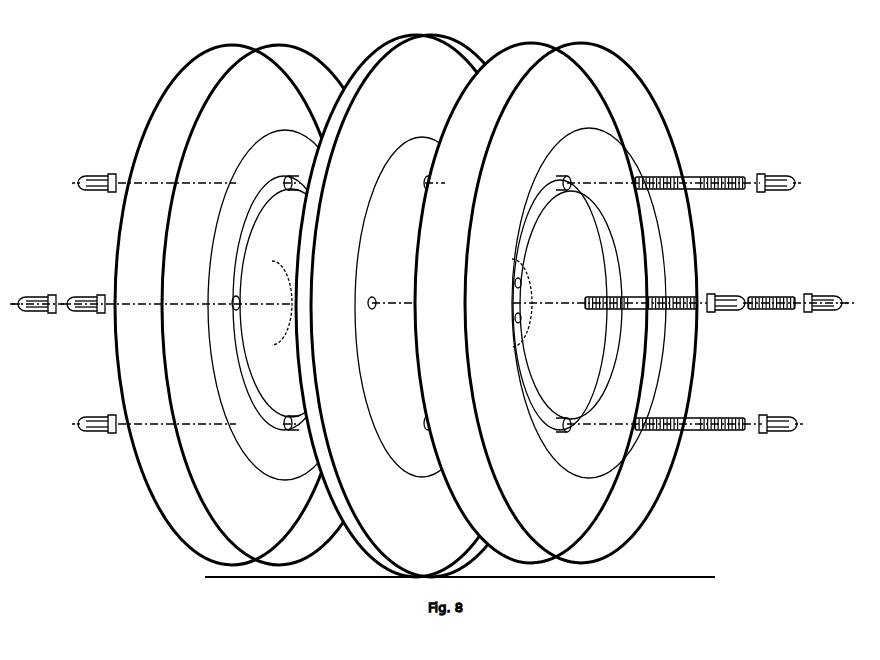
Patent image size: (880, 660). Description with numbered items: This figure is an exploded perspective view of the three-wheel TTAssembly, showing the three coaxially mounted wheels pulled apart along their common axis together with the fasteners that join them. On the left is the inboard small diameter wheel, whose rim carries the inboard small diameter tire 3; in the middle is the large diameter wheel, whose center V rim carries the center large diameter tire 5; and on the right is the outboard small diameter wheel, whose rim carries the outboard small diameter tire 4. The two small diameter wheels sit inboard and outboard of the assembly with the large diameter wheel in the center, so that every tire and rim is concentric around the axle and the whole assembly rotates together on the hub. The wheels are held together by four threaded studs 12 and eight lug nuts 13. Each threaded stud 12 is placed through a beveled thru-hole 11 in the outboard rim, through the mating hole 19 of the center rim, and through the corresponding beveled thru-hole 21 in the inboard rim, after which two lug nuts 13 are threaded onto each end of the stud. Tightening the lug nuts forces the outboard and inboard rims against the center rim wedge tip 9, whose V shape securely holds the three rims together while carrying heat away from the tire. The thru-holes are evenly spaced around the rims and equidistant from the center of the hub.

The inboard small diameter tire 3 is at (281, 71).
The outboard small diameter tire 4 is at (590, 68).
The center large diameter tire 5 is at (416, 75).
The center rim wedge tip 9 is at (406, 234).
The thru-hole in rim with beveled edge to accept lug nut 11 is at (571, 178).
The threaded stud 12 is at (694, 180).
The lug nut 13 is at (97, 175).
The center large diameter rim mating hole 19 is at (371, 298).
The thru-hole in rim with beveled edge to accept lug nut 21 is at (291, 176).